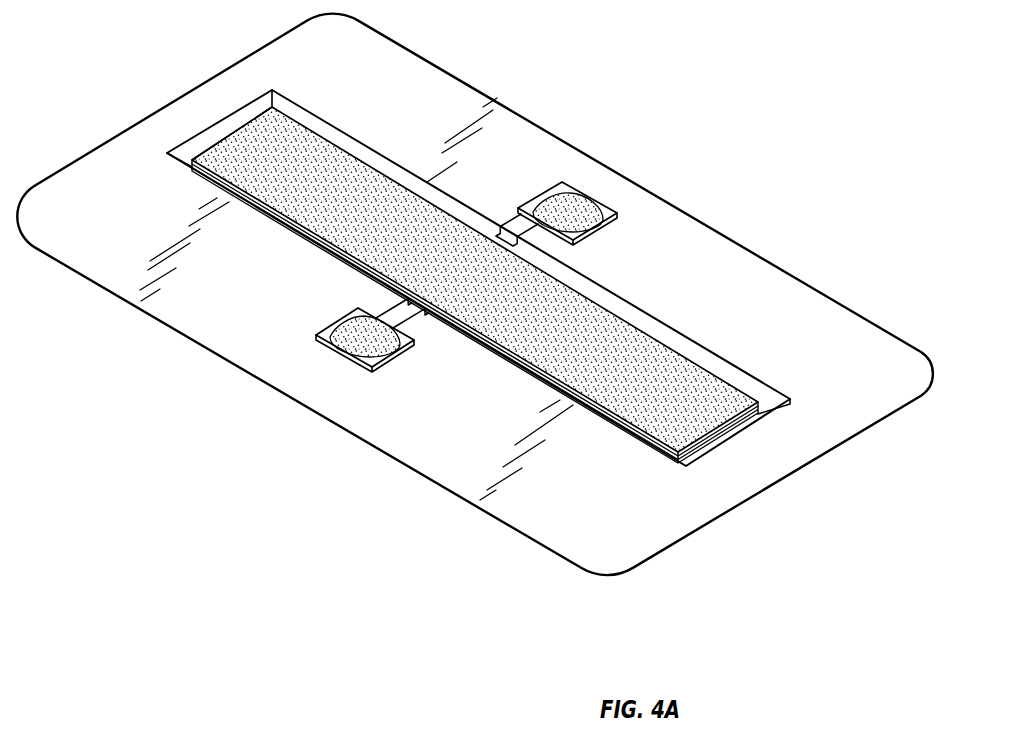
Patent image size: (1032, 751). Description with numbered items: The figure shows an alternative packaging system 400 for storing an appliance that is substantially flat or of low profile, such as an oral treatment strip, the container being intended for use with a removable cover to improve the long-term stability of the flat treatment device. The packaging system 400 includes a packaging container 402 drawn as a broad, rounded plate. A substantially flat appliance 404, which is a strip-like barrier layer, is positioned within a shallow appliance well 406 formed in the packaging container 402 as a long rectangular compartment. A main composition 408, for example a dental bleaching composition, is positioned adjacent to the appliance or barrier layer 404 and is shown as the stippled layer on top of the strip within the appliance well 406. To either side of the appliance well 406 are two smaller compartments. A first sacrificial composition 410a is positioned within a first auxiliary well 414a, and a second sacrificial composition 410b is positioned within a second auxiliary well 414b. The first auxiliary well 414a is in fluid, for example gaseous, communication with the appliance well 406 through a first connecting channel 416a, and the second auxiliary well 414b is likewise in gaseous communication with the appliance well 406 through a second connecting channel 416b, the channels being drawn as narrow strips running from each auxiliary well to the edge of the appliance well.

The packaging system 400 is at (475, 294).
The packaging container 402 is at (392, 65).
The substantially flat appliance 404 is at (740, 420).
The appliance well 406 is at (190, 162).
The main composition 408 is at (725, 397).
The first sacrificial composition 410a is at (328, 328).
The second sacrificial composition 410b is at (565, 212).
The first auxiliary well 414a is at (373, 358).
The second auxiliary well 414b is at (612, 213).
The first connecting channel 416a is at (390, 312).
The second connecting channel 416b is at (540, 238).